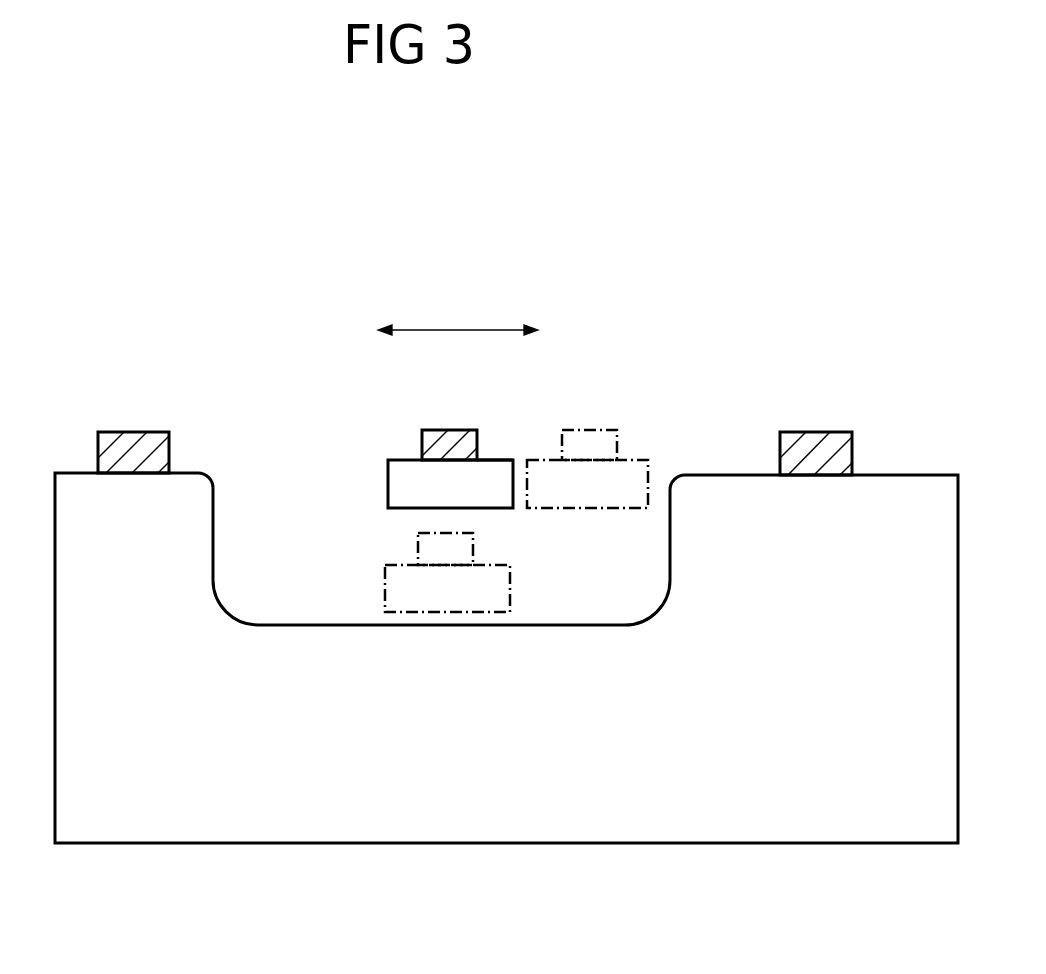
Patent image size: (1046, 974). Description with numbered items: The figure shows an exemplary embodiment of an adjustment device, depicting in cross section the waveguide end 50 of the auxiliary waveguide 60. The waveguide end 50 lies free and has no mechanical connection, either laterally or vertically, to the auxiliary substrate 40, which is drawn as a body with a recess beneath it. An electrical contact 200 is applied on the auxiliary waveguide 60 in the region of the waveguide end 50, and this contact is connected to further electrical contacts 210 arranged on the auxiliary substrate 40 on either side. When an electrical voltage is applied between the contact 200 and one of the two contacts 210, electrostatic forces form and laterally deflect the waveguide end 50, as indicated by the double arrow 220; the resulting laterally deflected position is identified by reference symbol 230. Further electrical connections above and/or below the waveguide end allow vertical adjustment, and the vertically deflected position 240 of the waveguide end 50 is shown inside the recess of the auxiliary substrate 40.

The auxiliary substrate 40 is at (707, 782).
The waveguide end 50 is at (407, 483).
The auxiliary waveguide 60 is at (487, 467).
The electrical contact 200 is at (433, 432).
The further electrical contacts 210 is at (132, 430).
The double arrow 220 is at (457, 328).
The deflected position 230 is at (617, 473).
The vertically deflected position 240 is at (403, 598).